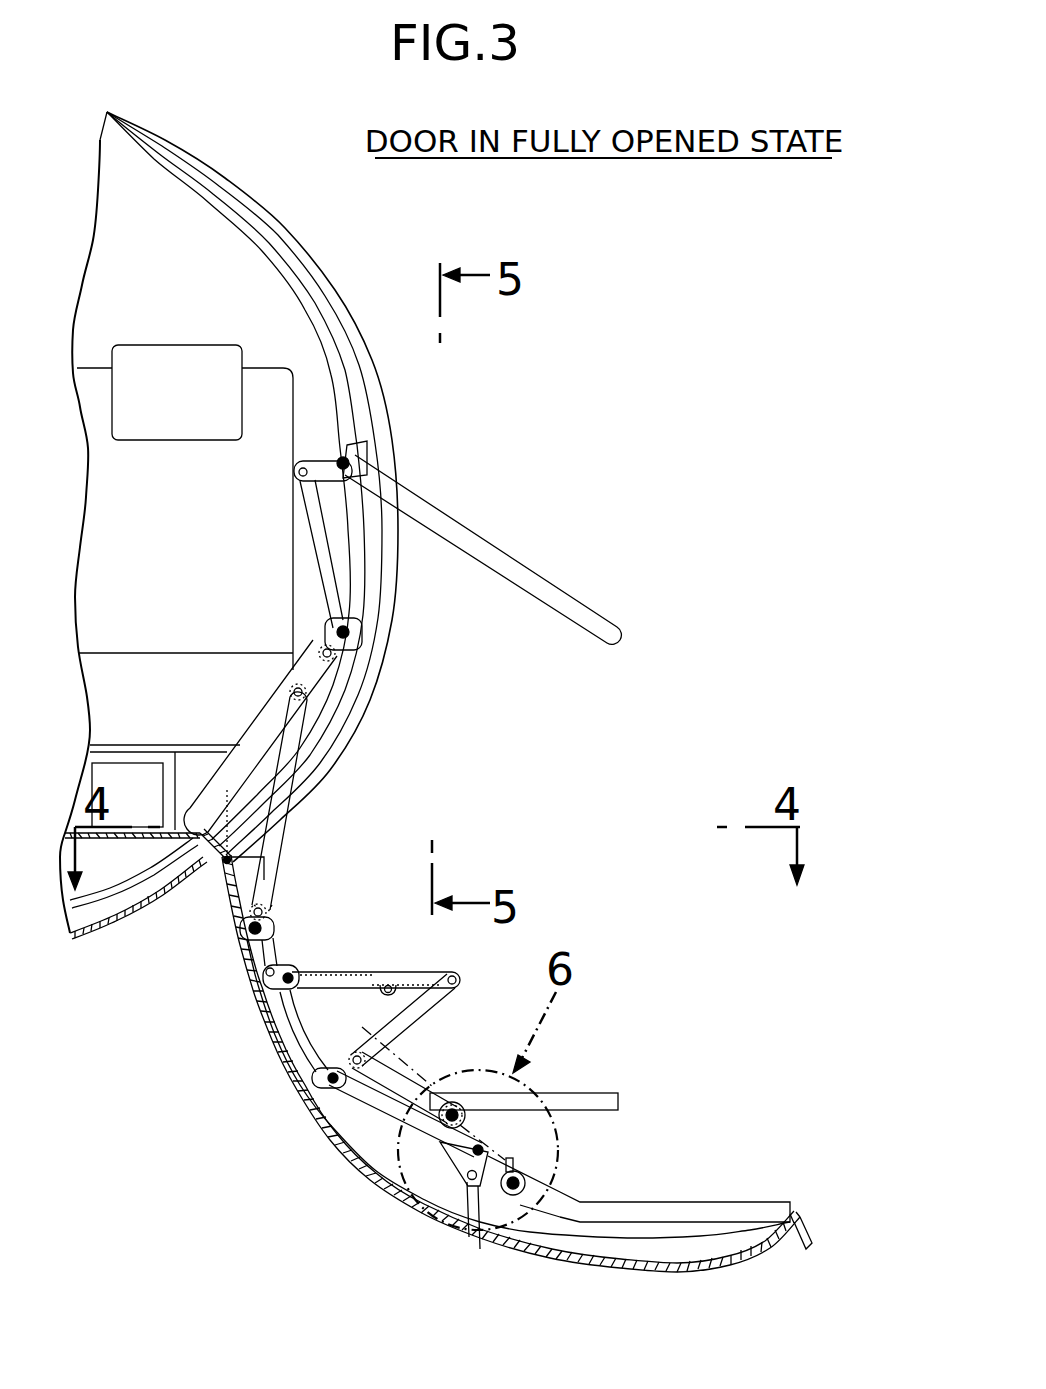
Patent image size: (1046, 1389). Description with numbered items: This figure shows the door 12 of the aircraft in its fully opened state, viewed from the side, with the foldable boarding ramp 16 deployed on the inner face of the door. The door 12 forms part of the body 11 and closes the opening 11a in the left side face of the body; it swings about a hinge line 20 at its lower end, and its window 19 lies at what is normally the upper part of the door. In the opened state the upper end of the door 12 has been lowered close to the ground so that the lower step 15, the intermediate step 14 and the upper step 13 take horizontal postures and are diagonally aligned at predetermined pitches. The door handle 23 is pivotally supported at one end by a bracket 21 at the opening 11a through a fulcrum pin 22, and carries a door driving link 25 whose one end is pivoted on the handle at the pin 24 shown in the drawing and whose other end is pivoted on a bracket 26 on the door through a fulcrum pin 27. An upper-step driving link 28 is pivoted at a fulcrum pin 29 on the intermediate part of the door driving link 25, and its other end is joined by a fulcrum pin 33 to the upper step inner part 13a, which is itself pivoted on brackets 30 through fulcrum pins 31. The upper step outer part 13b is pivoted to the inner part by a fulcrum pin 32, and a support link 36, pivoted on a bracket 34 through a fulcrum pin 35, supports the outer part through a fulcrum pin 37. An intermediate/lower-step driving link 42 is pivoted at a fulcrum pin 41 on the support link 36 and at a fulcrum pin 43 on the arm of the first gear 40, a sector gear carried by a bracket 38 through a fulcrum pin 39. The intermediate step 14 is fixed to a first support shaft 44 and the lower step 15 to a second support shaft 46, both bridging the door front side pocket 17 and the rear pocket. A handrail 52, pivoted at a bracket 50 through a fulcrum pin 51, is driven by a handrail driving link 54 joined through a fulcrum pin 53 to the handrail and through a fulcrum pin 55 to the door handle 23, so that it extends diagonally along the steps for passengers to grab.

The body 11 is at (183, 152).
The opening 11a is at (305, 245).
The door 12 is at (372, 1157).
The upper step 13 is at (317, 894).
The upper step inner part 13a is at (332, 973).
The upper step outer part 13b is at (415, 975).
The intermediate step 14 is at (577, 1100).
The lower step 15 is at (730, 1208).
The boarding ramp 16 is at (603, 1002).
The door front side pocket 17 is at (395, 1080).
The window 19 is at (627, 1273).
The hinge line 20 is at (222, 864).
The bracket 21 is at (352, 628).
The fulcrum pin 22 is at (338, 630).
The door handle 23 is at (262, 725).
The pin 24 is at (302, 695).
The door driving link 25 is at (280, 805).
The bracket 26 is at (249, 931).
The fulcrum pin 27 is at (275, 936).
The upper-step driving link 28 is at (260, 955).
The fulcrum pin 29 is at (263, 910).
The bracket 30 is at (273, 999).
The fulcrum pin 31 is at (292, 983).
The fulcrum pin 32 is at (385, 985).
The fulcrum pin 33 is at (263, 980).
The bracket 34 is at (327, 1095).
The fulcrum pin 35 is at (320, 1084).
The support link 36 is at (415, 1018).
The fulcrum pin 37 is at (458, 978).
The bracket 38 is at (443, 1195).
The fulcrum pin 39 is at (486, 1151).
The first gear 40 is at (465, 1133).
The fulcrum pin 41 is at (355, 1054).
The intermediate/lower-step driving link 42 is at (382, 1095).
The fulcrum pin 43 is at (475, 1182).
The first support shaft 44 is at (460, 1104).
The second support shaft 46 is at (523, 1185).
The bracket 50 is at (352, 449).
The fulcrum pin 51 is at (338, 458).
The handrail 52 is at (565, 592).
The fulcrum pin 53 is at (299, 472).
The handrail driving link 54 is at (310, 542).
The fulcrum pin 55 is at (331, 655).